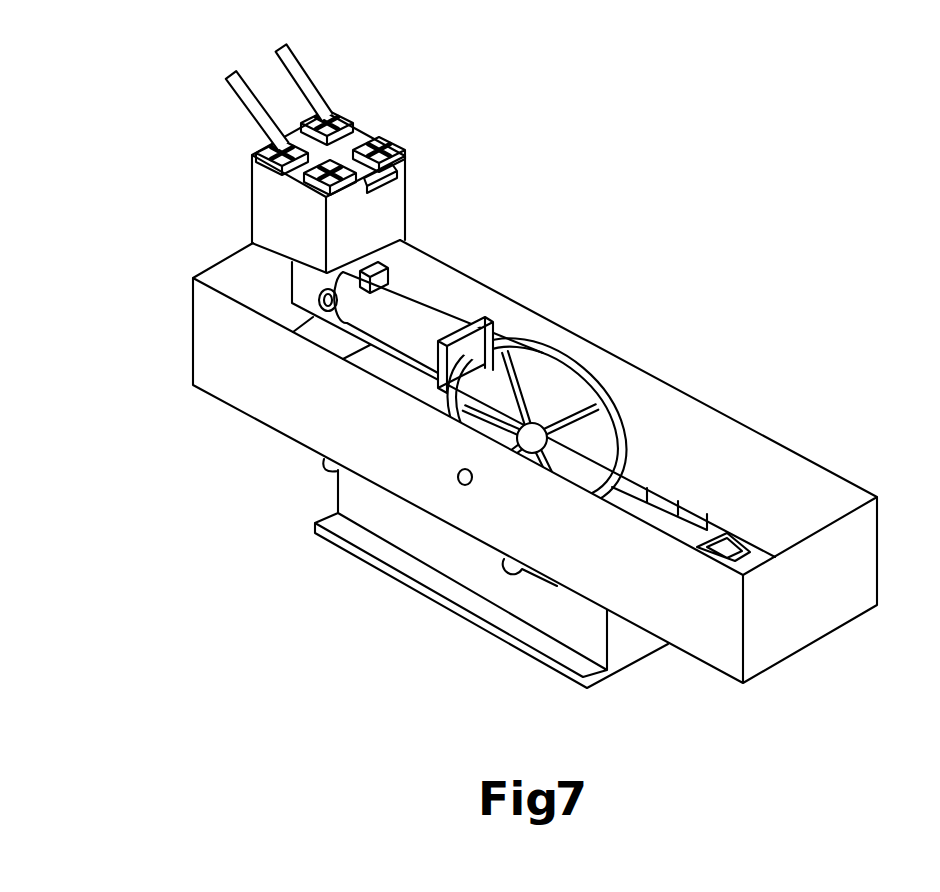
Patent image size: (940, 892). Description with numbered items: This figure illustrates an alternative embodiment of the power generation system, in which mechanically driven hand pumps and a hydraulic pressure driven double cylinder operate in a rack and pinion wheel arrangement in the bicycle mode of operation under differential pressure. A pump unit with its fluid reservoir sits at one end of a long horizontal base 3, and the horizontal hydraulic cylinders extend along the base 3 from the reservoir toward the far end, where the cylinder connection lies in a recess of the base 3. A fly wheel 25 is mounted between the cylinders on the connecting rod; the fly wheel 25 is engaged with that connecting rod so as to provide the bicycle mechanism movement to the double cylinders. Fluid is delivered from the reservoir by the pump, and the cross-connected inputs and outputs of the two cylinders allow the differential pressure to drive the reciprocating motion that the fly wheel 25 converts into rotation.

The base block 3 is at (712, 404).
The fly wheel 25 is at (543, 353).